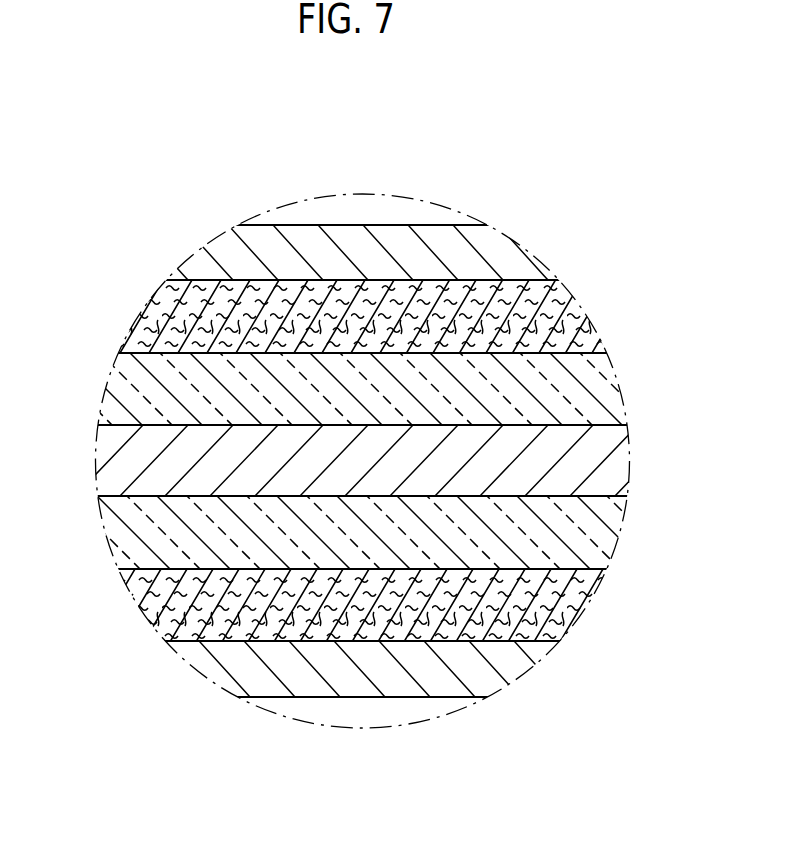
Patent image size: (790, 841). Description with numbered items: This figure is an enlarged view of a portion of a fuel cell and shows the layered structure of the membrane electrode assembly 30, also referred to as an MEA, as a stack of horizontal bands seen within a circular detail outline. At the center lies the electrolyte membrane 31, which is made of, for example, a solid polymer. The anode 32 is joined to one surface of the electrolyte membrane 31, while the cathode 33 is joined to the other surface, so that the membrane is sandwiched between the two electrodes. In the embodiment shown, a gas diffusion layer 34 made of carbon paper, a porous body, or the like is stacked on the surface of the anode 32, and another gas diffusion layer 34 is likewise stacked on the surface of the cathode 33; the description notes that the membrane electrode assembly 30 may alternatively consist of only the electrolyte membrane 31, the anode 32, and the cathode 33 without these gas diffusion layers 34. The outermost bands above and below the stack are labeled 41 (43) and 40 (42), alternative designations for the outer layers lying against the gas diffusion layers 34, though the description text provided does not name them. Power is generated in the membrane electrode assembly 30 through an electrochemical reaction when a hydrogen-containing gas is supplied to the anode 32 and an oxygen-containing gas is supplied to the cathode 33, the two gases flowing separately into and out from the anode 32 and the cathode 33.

The membrane electrode assembly 30 is at (356, 465).
The electrolyte membrane 31 is at (140, 460).
The anode 32 is at (145, 390).
The cathode 33 is at (147, 533).
The gas diffusion layer 34 is at (147, 309).
The first outer layer 40 is at (362, 724).
The second outer layer 41 is at (362, 202).
The first outer layer (alternative) 42 is at (410, 697).
The second outer layer (alternative) 43 is at (408, 225).